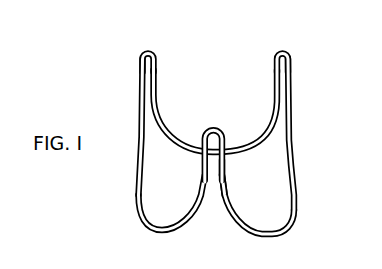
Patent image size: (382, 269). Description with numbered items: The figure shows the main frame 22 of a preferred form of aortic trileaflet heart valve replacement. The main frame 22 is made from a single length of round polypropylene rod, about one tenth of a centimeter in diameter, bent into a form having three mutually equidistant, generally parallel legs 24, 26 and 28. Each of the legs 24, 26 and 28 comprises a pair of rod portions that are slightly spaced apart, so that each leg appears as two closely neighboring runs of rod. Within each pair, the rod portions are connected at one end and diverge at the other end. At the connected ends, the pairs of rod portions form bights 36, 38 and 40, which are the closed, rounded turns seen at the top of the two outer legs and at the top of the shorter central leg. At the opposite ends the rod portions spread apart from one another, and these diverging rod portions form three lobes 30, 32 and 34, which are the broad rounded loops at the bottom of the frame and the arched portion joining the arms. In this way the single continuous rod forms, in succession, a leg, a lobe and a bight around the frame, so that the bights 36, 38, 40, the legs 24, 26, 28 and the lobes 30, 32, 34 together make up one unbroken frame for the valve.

The main frame 22 is at (205, 65).
The leg 24 is at (140, 91).
The leg 26 is at (226, 177).
The leg 28 is at (292, 93).
The lobe 30 is at (158, 234).
The lobe 32 is at (278, 238).
The lobe 34 is at (188, 153).
The bight 36 is at (149, 51).
The bight 38 is at (214, 126).
The bight 40 is at (285, 51).